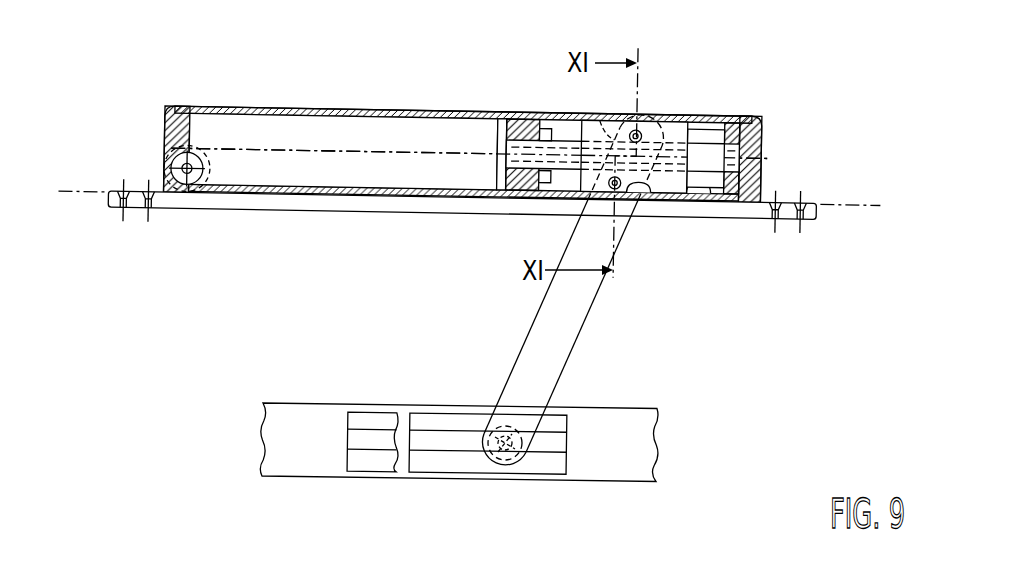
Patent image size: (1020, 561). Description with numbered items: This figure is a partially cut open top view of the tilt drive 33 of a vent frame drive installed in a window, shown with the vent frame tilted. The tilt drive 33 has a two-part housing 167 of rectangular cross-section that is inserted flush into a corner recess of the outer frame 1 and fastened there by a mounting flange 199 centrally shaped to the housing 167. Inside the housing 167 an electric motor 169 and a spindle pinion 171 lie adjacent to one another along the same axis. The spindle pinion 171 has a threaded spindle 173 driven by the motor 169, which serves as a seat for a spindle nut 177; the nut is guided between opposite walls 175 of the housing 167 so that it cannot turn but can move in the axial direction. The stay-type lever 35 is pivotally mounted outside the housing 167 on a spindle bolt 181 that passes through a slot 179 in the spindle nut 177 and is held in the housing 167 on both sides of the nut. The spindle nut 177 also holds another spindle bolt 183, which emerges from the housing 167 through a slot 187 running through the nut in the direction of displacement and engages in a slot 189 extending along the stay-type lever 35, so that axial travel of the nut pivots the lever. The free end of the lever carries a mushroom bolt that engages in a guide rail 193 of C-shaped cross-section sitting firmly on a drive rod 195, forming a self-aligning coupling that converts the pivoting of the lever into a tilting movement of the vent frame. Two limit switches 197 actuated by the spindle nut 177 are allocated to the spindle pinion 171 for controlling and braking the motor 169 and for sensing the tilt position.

The outer frame 1 is at (855, 204).
The tilt drive 33 is at (425, 90).
The stay-type lever 35 is at (550, 362).
The housing 167 is at (318, 112).
The electric motor 169 is at (257, 128).
The spindle pinion 171 is at (718, 128).
The threaded spindle 173 is at (523, 168).
The walls of the housing 175 is at (557, 127).
The spindle nut 177 is at (707, 112).
The slot 179 is at (670, 198).
The spindle bolt 181 is at (630, 198).
The spindle bolt 183 is at (648, 113).
The slot 187 is at (612, 101).
The slot 189 is at (642, 130).
The guide rail 193 is at (455, 422).
The drive rod 195 is at (625, 463).
The limit switches 197 is at (537, 115).
The mounting flange 199 is at (313, 201).